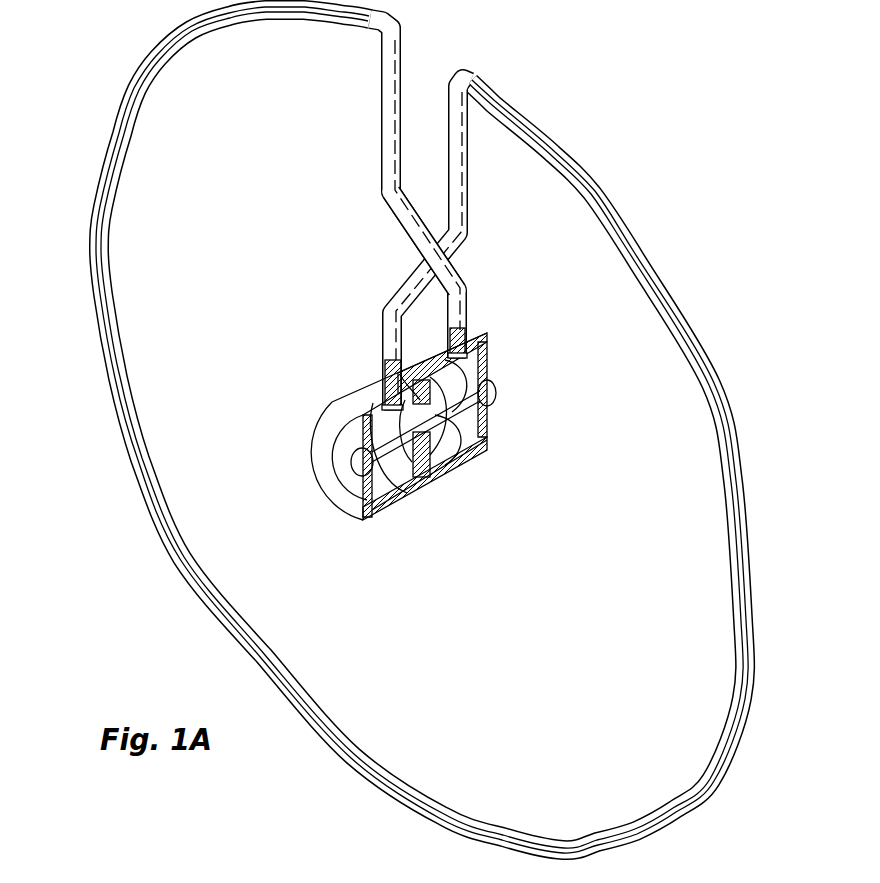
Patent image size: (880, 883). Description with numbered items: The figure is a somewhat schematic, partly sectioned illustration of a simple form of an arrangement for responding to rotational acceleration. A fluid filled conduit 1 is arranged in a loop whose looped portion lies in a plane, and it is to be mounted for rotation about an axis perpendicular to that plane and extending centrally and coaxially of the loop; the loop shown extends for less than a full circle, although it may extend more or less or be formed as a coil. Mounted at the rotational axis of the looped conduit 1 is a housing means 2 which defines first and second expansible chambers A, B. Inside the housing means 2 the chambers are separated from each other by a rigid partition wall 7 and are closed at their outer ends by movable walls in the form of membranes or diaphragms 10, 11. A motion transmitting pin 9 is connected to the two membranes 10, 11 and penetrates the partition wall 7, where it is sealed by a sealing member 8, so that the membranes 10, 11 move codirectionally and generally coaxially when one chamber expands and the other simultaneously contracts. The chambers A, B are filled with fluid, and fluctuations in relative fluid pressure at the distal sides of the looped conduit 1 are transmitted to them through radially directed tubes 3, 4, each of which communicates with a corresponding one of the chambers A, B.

The fluid filled conduit 1 is at (746, 528).
The housing means 2 is at (440, 558).
The radially directed tube 3 is at (455, 183).
The radially directed tube 4 is at (385, 137).
The rigid partition wall 7 is at (421, 474).
The sealing member 8 is at (405, 376).
The motion transmitting pin 9 is at (478, 416).
The membrane 10 is at (343, 438).
The membrane 11 is at (468, 372).
The first expansible chamber A is at (390, 478).
The second expansible chamber B is at (452, 448).